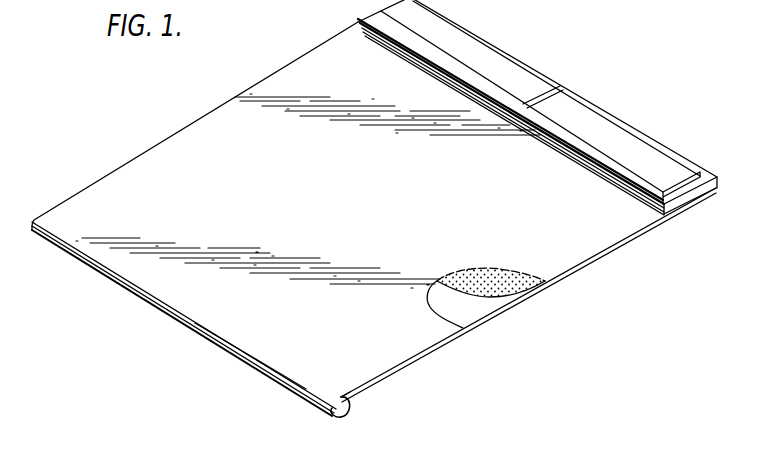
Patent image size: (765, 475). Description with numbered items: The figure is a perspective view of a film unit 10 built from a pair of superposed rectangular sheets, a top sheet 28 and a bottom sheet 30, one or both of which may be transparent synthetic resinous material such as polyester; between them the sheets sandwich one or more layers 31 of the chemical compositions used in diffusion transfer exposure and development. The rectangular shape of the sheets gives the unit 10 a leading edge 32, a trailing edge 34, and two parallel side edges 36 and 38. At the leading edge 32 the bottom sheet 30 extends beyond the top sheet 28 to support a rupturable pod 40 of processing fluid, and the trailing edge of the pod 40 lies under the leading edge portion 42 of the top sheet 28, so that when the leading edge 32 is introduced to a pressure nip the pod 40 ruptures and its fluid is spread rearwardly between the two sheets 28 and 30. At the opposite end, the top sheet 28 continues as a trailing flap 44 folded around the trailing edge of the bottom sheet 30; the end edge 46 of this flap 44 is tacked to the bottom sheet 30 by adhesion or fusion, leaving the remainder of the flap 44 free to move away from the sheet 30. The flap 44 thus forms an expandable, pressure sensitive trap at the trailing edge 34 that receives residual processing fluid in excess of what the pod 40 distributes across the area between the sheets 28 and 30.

The film unit 10 is at (166, 122).
The top sheet 28 is at (598, 236).
The bottom sheet 30 is at (472, 309).
The layers of chemical compositions 31 is at (533, 292).
The leading edge 32 is at (537, 63).
The trailing edge 34 is at (190, 327).
The side edge 36 is at (122, 167).
The side edge 38 is at (437, 340).
The rupturable pod 40 is at (612, 132).
The leading edge portion 42 is at (530, 127).
The trailing flap 44 is at (338, 415).
The end edge 46 is at (352, 400).